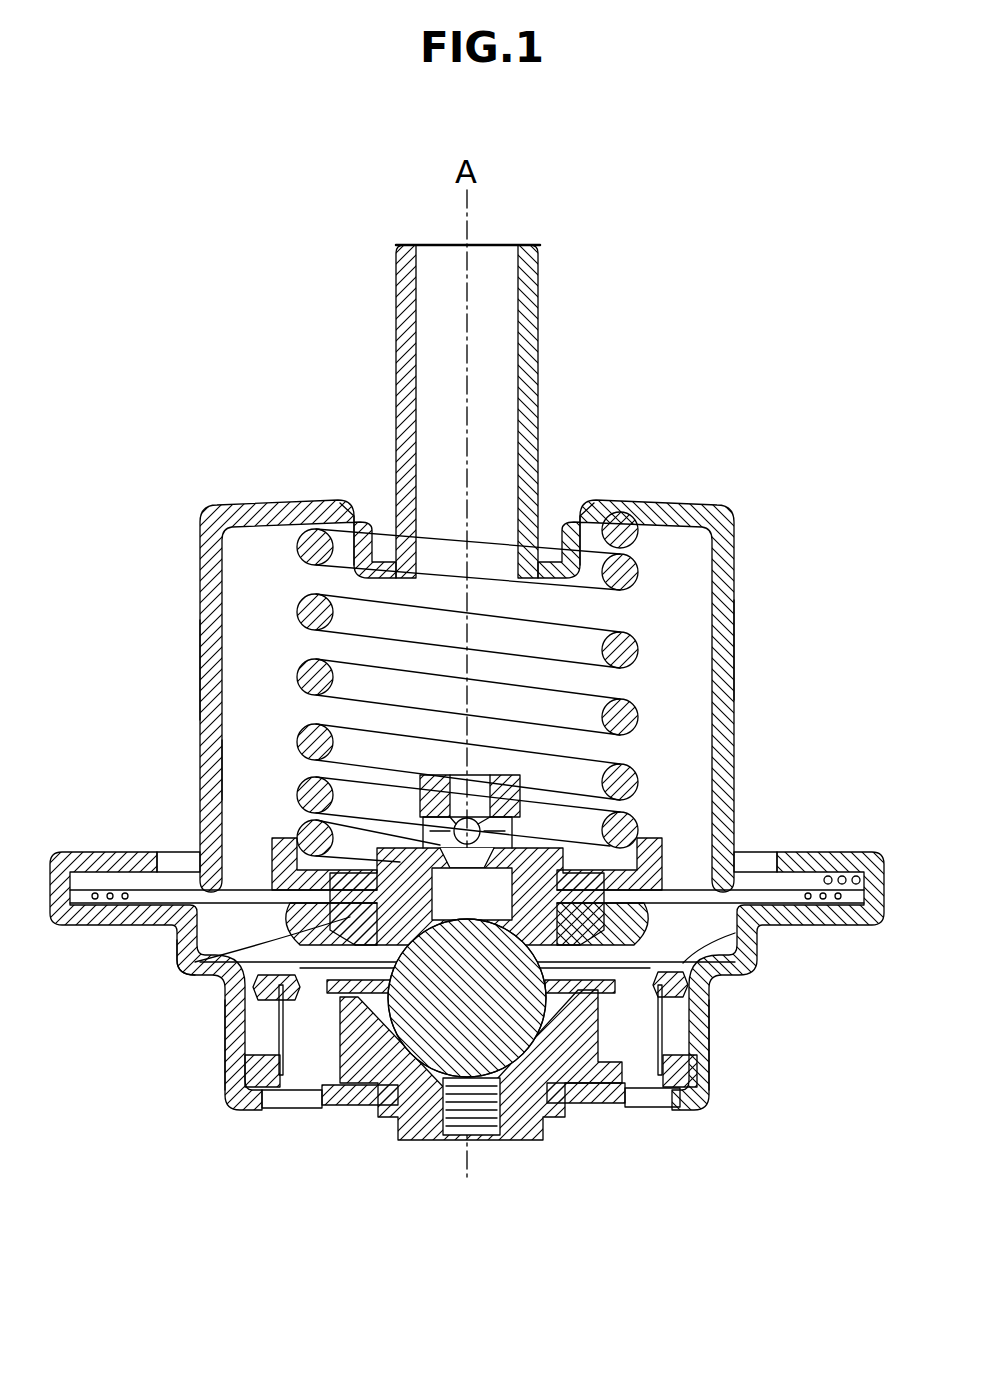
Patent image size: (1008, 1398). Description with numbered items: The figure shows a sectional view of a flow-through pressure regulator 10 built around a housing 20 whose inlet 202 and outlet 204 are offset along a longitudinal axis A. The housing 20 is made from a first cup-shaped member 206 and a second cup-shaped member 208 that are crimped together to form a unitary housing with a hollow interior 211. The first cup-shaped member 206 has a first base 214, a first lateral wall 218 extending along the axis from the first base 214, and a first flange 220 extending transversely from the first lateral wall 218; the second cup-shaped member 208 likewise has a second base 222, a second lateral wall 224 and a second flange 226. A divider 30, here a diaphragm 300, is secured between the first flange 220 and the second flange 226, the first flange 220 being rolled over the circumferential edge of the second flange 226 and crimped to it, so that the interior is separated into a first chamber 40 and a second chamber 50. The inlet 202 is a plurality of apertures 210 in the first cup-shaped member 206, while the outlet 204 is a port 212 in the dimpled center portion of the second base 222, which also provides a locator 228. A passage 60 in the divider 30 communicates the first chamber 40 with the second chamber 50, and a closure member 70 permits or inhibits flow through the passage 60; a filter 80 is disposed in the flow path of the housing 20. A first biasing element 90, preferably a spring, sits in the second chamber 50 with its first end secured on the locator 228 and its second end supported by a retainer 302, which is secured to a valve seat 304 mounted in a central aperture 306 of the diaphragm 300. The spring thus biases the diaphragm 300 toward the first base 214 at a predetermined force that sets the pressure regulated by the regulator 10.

The flow-through pressure regulator 10 is at (150, 362).
The housing 20 is at (810, 728).
The divider 30 is at (712, 873).
The first chamber 40 is at (780, 922).
The second chamber 50 is at (705, 585).
The passage 60 is at (478, 912).
The closure member 70 is at (573, 1063).
The filter 80 is at (667, 1010).
The first biasing element 90 is at (305, 578).
The inlet 202 is at (318, 1212).
The outlet 204 is at (430, 240).
The first cup-shaped member 206 is at (235, 1092).
The second cup-shaped member 208 is at (215, 656).
The apertures 210 is at (270, 1104).
The hollow interior 211 is at (245, 766).
The port 212 is at (490, 262).
The first base 214 is at (345, 1104).
The first lateral wall 218 is at (718, 1097).
The first flange 220 is at (875, 905).
The second base 222 is at (640, 520).
The second lateral wall 224 is at (737, 622).
The second flange 226 is at (825, 870).
The locator 228 is at (375, 540).
The diaphragm 300 is at (720, 935).
The retainer 302 is at (272, 840).
The valve seat 304 is at (193, 963).
The central aperture 306 is at (690, 950).